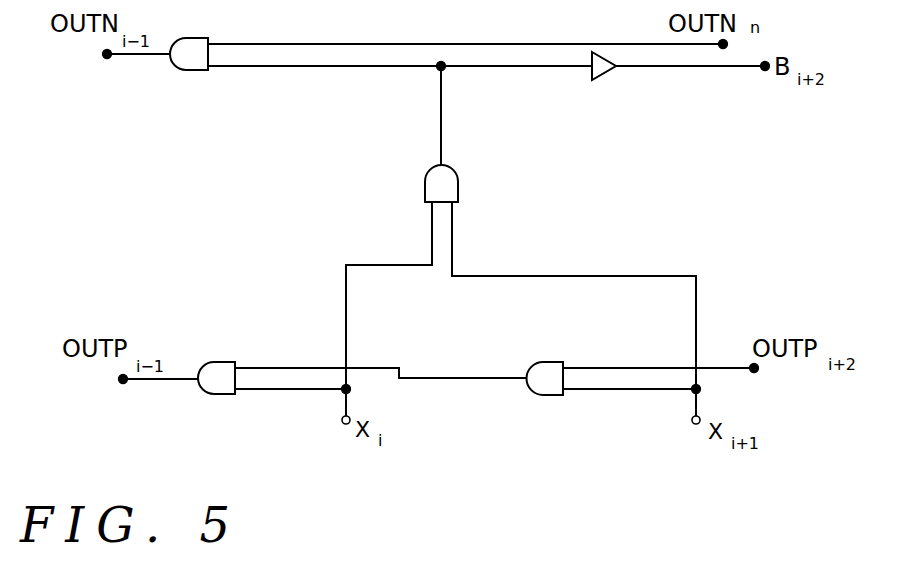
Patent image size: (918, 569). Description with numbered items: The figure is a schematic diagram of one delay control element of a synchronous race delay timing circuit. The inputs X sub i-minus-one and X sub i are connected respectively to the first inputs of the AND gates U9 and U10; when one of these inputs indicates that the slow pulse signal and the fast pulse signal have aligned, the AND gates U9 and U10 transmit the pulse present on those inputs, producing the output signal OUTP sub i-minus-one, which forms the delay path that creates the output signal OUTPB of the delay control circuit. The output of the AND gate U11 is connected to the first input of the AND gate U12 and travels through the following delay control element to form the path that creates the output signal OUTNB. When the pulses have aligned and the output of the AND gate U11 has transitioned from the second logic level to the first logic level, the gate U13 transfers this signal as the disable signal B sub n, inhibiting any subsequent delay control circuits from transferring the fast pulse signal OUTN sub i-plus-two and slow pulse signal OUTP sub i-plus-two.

The AND gate U9 is at (177, 393).
The AND gate U10 is at (641, 394).
The AND gate U11 is at (467, 134).
The AND gate U12 is at (159, 74).
The gate U13 is at (676, 82).